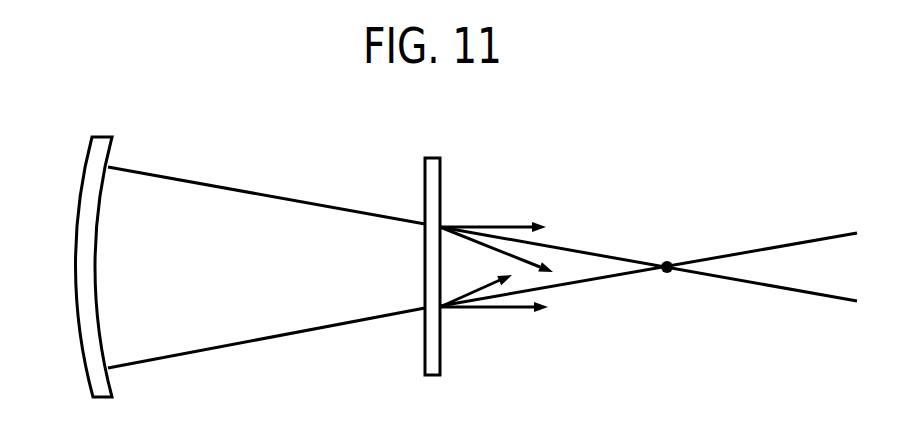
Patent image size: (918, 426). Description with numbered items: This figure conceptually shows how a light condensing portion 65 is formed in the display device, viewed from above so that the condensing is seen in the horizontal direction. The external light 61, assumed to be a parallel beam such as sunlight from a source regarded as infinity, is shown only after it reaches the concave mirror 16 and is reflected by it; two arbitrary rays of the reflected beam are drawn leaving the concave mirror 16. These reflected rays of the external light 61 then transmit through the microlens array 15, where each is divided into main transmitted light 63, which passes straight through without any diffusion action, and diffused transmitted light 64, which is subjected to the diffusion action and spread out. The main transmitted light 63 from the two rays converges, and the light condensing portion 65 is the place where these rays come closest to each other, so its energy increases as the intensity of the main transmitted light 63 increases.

The concave mirror 16 is at (75, 272).
The external light 61 is at (218, 185).
The microlens array 15 is at (430, 158).
The main transmitted light 63 is at (617, 273).
The diffused transmitted light 64 is at (503, 252).
The light condensing portion 65 is at (670, 261).